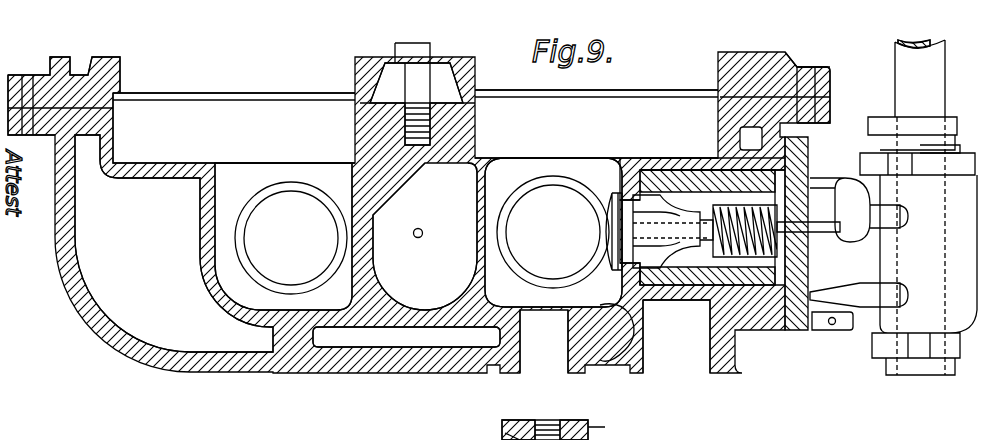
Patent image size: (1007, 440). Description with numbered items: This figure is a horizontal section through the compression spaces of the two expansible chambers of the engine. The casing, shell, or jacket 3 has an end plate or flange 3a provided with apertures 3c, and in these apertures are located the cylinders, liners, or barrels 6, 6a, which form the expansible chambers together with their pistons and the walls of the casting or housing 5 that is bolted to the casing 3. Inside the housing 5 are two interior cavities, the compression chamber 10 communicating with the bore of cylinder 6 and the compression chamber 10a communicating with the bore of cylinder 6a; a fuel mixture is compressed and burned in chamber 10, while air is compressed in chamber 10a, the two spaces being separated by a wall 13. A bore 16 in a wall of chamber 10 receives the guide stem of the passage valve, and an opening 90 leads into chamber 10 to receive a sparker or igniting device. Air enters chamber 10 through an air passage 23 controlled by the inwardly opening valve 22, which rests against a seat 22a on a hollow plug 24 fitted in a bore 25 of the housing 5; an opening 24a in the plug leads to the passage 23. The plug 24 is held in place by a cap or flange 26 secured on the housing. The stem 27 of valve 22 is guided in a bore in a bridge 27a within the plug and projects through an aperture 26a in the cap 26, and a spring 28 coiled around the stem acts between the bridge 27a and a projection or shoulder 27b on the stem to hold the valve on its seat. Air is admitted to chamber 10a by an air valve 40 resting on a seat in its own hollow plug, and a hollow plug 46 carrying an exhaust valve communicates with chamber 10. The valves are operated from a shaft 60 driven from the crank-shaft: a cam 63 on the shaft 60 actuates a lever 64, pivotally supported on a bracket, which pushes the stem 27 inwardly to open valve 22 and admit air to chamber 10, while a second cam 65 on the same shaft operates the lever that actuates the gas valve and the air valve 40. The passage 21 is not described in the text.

The casing 3 is at (64, 95).
The end plate 3a is at (787, 67).
The aperture 3c is at (752, 95).
The casting or housing 5 is at (757, 318).
The cylinder 6 is at (718, 70).
The cylinder 6a is at (358, 80).
The compression chamber 10 is at (553, 232).
The compression chamber 10a is at (343, 179).
The wall 13 is at (385, 190).
The bore 16 is at (430, 240).
The passage 21 is at (287, 243).
The valve 22 is at (607, 233).
The seat 22a is at (614, 221).
The air passage 23 is at (677, 368).
The hollow plug 24 is at (673, 231).
The opening 24a is at (672, 275).
The bore 25 is at (690, 175).
The cap or flange 26 is at (803, 168).
The aperture 26a is at (813, 242).
The stem 27 is at (646, 233).
The bridge 27a is at (690, 243).
The projection or shoulder 27b is at (793, 252).
The spring 28 is at (745, 224).
The air valve 40 is at (553, 223).
The hollow plug 46 is at (553, 232).
The shaft 60 is at (920, 78).
The cam 63 is at (918, 246).
The lever 64 is at (860, 186).
The cam 65 is at (914, 135).
The opening 90 is at (544, 341).